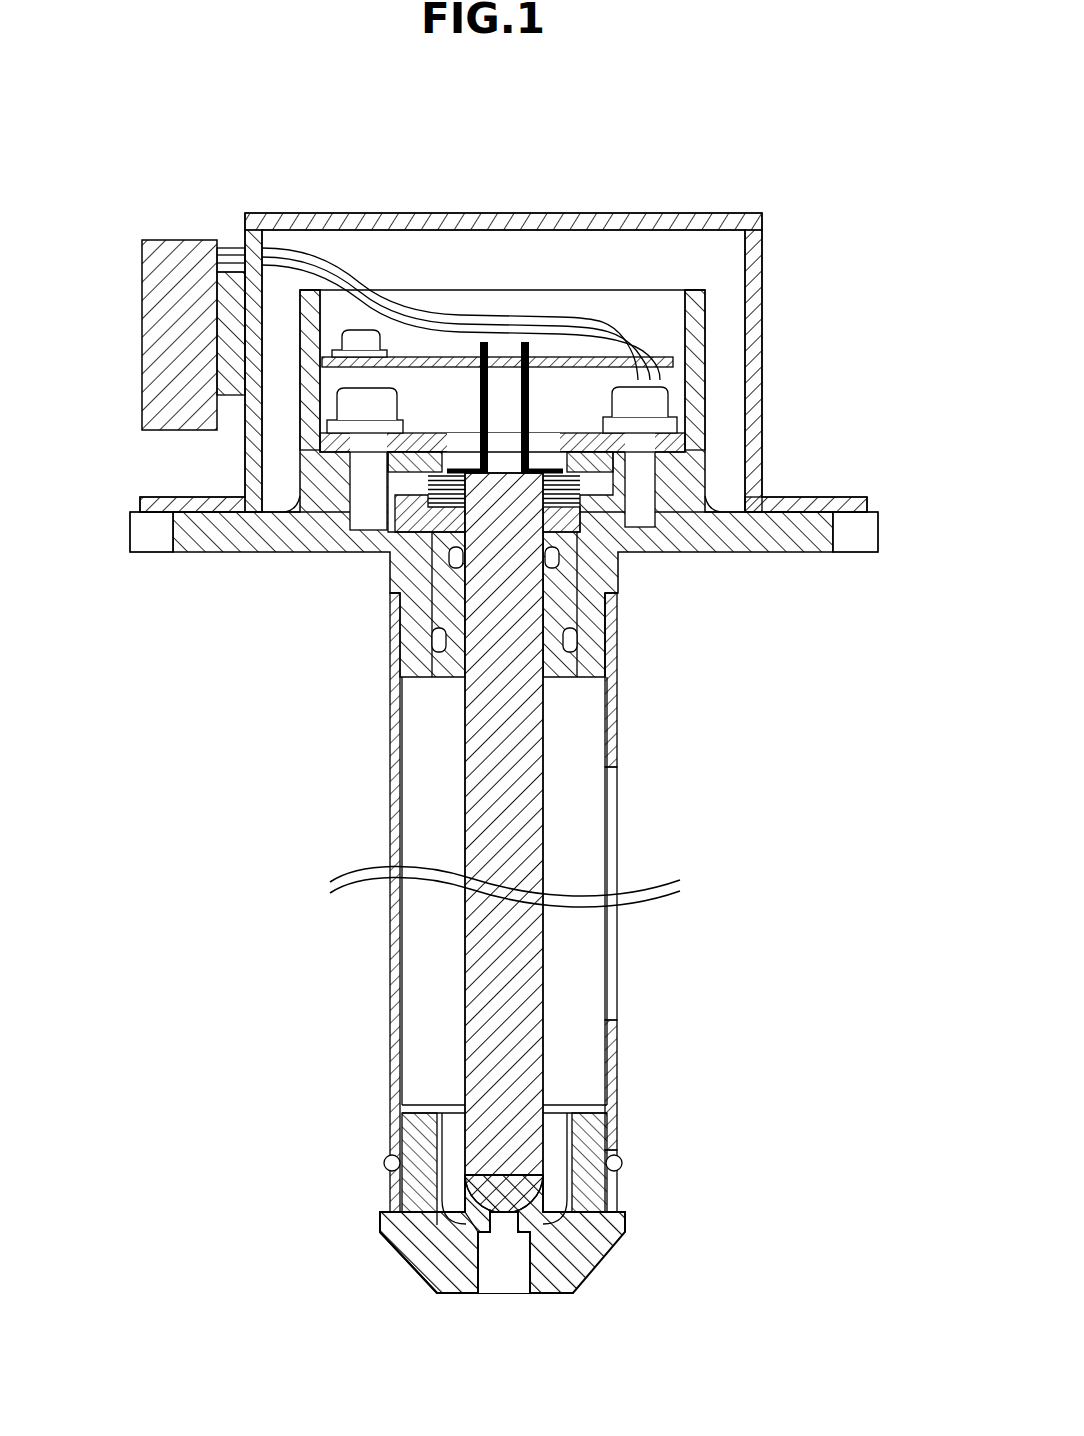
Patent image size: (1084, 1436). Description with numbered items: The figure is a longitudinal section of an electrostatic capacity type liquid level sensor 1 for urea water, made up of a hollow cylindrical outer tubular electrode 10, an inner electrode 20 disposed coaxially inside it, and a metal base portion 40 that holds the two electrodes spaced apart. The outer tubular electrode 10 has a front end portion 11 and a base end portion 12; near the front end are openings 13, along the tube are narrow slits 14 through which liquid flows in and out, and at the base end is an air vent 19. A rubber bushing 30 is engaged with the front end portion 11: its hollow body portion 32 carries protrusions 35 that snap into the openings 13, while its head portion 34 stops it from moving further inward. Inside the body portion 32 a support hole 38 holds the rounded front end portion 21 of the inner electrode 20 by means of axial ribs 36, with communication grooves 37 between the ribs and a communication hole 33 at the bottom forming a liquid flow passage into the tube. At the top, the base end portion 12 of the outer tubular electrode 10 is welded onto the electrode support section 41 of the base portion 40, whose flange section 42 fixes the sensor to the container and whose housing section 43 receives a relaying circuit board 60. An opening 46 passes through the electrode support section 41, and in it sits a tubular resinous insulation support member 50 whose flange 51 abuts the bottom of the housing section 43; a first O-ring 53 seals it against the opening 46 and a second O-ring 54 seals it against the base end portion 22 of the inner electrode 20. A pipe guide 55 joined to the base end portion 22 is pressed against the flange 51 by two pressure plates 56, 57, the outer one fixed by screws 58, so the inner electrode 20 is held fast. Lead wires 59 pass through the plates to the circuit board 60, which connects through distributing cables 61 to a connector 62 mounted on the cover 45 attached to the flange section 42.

The liquid level sensor 1 is at (810, 145).
The outer tubular electrode 10 is at (396, 789).
The front end portion 11 is at (495, 1234).
The base end portion 12 is at (416, 614).
The openings 13 is at (617, 1150).
The slits 14 is at (612, 983).
The air vent 19 is at (393, 714).
The inner electrode 20 is at (520, 944).
The front end portion 21 is at (560, 1097).
The base end portion 22 is at (560, 688).
The bushing 30 is at (483, 1265).
The body portion 32 is at (608, 1188).
The communication hole 33 is at (484, 1262).
The head portion 34 is at (378, 1230).
The protrusions 35 is at (378, 1186).
The axial ribs 36 is at (514, 1225).
The communication grooves 37 is at (477, 1220).
The support hole 38 is at (443, 1215).
The base portion 40 is at (503, 330).
The electrode support section 41 is at (504, 494).
The flange section 42 is at (220, 545).
The housing section 43 is at (702, 365).
The cover 45 is at (573, 226).
The opening 46 is at (612, 586).
The insulation support member 50 is at (608, 612).
The flange 51 is at (678, 552).
The first O-ring 53 is at (435, 642).
The second O-ring 54 is at (452, 558).
The pipe guide 55 is at (578, 490).
The pressure plate 56 is at (600, 462).
The pressure plate 57 is at (582, 434).
The screws 58 is at (648, 400).
The lead wires 59 is at (500, 396).
The circuit board 60 is at (475, 357).
The distributing cables 61 is at (342, 286).
The connector 62 is at (184, 240).